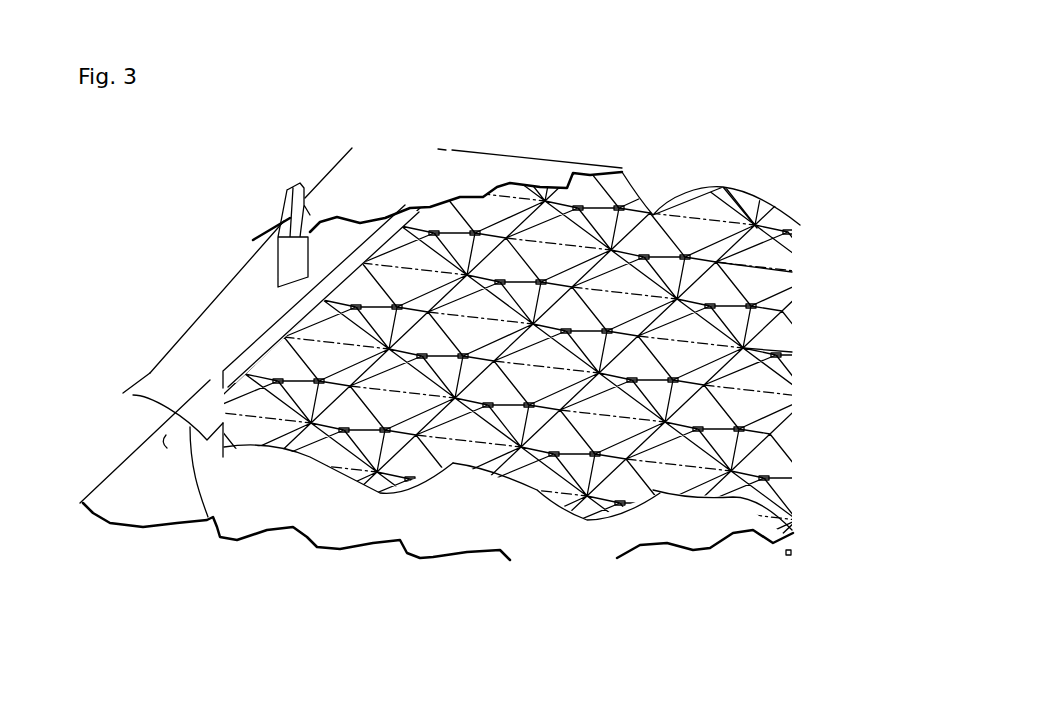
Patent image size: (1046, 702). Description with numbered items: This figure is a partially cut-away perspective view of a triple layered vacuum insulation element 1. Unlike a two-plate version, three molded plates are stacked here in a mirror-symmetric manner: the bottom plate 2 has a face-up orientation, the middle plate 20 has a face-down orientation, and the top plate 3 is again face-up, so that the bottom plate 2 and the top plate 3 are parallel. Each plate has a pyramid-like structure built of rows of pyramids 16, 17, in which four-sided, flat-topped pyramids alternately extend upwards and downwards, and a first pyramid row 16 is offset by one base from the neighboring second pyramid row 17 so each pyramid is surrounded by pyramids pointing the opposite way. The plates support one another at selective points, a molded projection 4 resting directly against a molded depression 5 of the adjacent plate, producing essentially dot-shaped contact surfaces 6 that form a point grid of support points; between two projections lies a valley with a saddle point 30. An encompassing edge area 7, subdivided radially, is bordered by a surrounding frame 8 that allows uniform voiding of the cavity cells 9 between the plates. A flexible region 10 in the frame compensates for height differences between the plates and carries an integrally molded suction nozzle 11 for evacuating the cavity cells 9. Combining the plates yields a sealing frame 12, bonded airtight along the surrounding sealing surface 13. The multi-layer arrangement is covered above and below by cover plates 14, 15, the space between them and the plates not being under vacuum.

The vacuum insulation element 1 is at (800, 88).
The lower molded plate 2 is at (508, 395).
The upper molded plate 3 is at (475, 470).
The molded projection 4 is at (564, 350).
The molded depression 5 is at (743, 411).
The contact surface 6 is at (690, 487).
The edge area 7 is at (207, 356).
The surrounding frame 8 is at (210, 520).
The cavity cells 9 is at (590, 493).
The flexible region 10 is at (167, 448).
The suction nozzle 11 is at (290, 252).
The sealing frame 12 is at (148, 372).
The sealing surface 13 is at (136, 390).
The cover plate 14 is at (408, 178).
The cover plate 15 is at (320, 525).
The first pyramid row 16 is at (822, 478).
The second pyramid row 17 is at (822, 448).
The middle plate 20 is at (533, 487).
The saddle point 30 is at (767, 348).